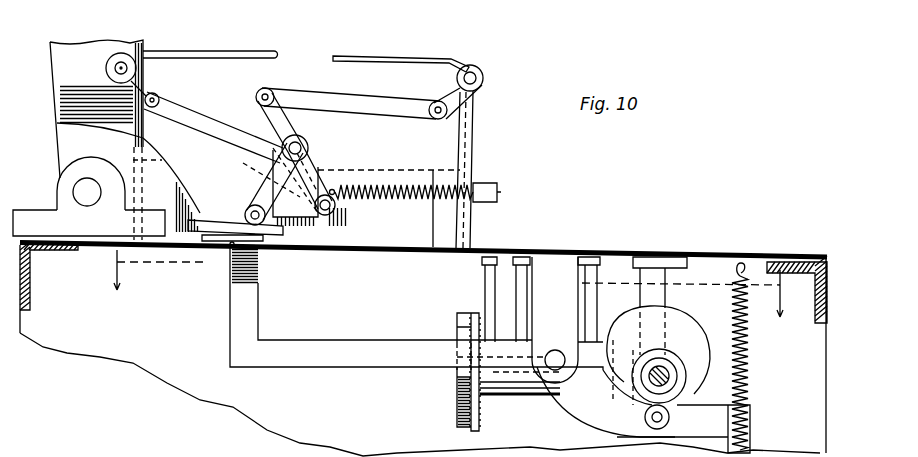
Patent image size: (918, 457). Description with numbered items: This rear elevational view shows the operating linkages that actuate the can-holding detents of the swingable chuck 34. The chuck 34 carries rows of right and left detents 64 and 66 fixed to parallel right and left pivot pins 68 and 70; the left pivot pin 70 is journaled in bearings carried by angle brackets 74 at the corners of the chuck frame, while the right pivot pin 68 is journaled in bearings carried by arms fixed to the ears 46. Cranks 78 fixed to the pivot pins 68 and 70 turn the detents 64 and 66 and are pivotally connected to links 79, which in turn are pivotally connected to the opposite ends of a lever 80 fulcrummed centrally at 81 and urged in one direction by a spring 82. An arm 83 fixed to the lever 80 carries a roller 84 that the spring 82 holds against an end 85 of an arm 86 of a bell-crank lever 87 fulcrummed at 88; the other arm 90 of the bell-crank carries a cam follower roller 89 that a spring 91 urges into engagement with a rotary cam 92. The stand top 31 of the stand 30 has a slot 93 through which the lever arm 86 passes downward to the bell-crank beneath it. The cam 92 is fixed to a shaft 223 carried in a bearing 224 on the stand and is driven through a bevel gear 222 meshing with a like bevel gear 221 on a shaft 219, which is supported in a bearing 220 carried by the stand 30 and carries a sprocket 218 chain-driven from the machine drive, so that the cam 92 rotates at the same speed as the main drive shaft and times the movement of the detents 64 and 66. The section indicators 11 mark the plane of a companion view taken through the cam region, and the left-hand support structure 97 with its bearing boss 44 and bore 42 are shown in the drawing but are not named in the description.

The section line 11 is at (450, 283).
The stand 30 is at (745, 238).
The stand top 31 is at (630, 248).
The swinging chuck 34 is at (91, 36).
The shaft opening 42 is at (84, 198).
The bearing 44 is at (58, 178).
The ears 46 is at (66, 136).
The right detents 64 is at (222, 52).
The left detents 66 is at (399, 57).
The right pivot pin 68 is at (108, 68).
The left pivot pin 70 is at (484, 77).
The angle brackets 74 is at (473, 140).
The cranks 78 is at (128, 82).
The links 79 is at (193, 122).
The lever 80 is at (271, 124).
The fulcrum 81 is at (307, 146).
The spring 82 is at (342, 189).
The arm 83 is at (266, 189).
The roller 84 is at (287, 221).
The end 85 is at (222, 219).
The arm 86 is at (248, 290).
The bell-crank lever 87 is at (430, 337).
The fulcrum 88 is at (562, 350).
The cam follower roller 89 is at (670, 417).
The arm 90 is at (577, 392).
The spring 91 is at (750, 373).
The rotary cam 92 is at (674, 303).
The slot 93 is at (231, 247).
The frame 97 is at (45, 63).
The sprocket 218 is at (462, 406).
The shaft 219 is at (510, 384).
The bearing 220 is at (545, 400).
The bevel gear 221 is at (604, 401).
The bevel gear 222 is at (716, 376).
The shaft 223 is at (662, 362).
The bearing 224 is at (673, 258).